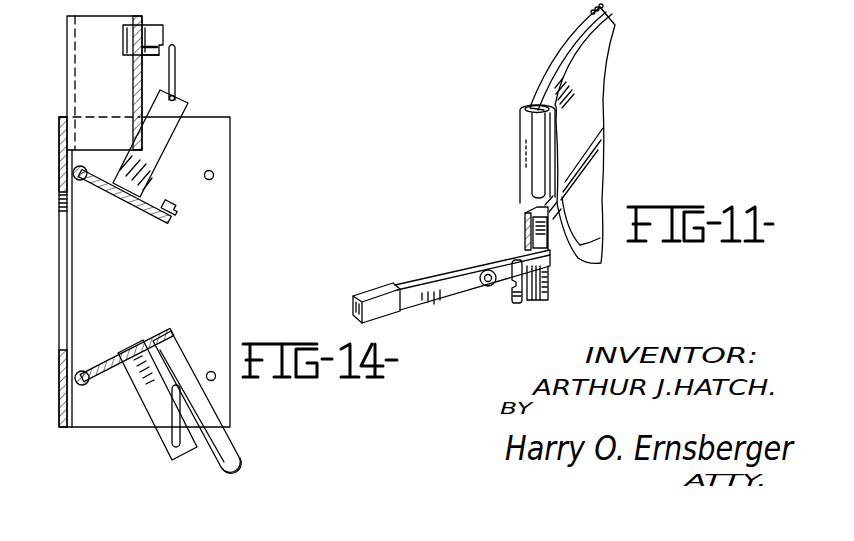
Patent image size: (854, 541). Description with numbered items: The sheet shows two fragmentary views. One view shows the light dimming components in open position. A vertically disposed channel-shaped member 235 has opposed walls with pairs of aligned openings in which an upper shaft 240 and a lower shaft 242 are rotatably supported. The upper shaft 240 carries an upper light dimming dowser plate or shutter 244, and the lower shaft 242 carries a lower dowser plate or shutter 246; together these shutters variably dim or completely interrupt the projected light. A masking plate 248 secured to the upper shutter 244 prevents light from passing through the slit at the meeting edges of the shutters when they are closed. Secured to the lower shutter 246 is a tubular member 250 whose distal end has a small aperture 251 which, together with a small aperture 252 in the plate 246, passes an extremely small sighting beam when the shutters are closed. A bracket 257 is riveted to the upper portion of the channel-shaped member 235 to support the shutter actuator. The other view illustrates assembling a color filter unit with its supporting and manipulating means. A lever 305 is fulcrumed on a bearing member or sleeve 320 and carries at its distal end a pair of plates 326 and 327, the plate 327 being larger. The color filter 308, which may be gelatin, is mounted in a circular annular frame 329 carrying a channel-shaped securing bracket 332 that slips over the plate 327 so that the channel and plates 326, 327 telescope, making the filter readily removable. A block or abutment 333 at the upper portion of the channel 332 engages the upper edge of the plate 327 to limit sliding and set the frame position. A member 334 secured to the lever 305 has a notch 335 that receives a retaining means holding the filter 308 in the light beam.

In FIG. 14, the channel-shaped member 235 is at (204, 119).
In FIG. 14, the bracket 257 is at (114, 85).
In FIG. 14, the upper shaft 240 is at (72, 176).
In FIG. 14, the upper light dimming dowser plate 244 is at (144, 203).
In FIG. 14, the masking plate 248 is at (177, 205).
In FIG. 14, the lower shaft 242 is at (75, 376).
In FIG. 14, the lower light dimming dowser plate 246 is at (115, 357).
In FIG. 14, the small aperture 251 is at (153, 331).
In FIG. 14, the tubular member 250 is at (208, 407).
In FIG. 14, the small aperture 252 is at (238, 463).
In FIG. 11, the color filter 308 is at (605, 111).
In FIG. 11, the circular annular frame 329 is at (564, 57).
In FIG. 11, the channel-shaped securing bracket 332 is at (521, 122).
In FIG. 11, the block or abutment 333 is at (533, 104).
In FIG. 11, the plate 327 is at (525, 215).
In FIG. 11, the lever 305 is at (507, 258).
In FIG. 11, the bearing member or sleeve 320 is at (480, 272).
In FIG. 11, the notch 335 is at (507, 299).
In FIG. 11, the member 334 is at (518, 303).
In FIG. 11, the plate 326 is at (549, 292).